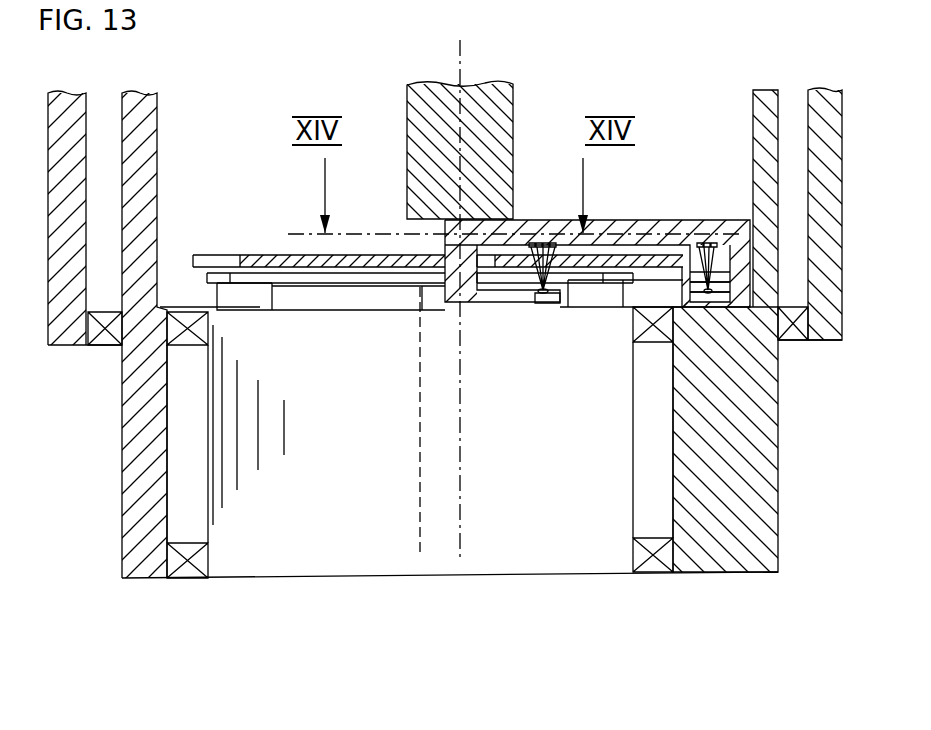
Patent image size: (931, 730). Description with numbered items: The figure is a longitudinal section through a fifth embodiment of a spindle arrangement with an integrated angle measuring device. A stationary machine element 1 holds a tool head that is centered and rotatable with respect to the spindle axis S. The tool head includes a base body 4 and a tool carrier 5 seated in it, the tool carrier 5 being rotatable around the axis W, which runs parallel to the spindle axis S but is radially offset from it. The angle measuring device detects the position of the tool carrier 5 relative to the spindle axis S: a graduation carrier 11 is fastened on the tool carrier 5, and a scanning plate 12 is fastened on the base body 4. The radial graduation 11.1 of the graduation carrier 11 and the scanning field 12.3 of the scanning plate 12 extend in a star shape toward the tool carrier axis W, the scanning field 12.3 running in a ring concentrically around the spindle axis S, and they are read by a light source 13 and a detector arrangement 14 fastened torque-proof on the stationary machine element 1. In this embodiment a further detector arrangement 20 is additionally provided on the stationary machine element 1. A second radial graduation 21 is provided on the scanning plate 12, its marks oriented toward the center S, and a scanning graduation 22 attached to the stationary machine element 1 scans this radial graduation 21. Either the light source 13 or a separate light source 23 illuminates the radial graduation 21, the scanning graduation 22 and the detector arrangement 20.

The stationary machine element 1 is at (497, 127).
The base body 4 is at (717, 533).
The tool carrier 5 is at (570, 523).
The graduation carrier 11 is at (222, 278).
The radial graduation 11.1 is at (262, 283).
The scanning plate 12 is at (320, 262).
The scanning field 12.3 is at (512, 260).
The light source 13 is at (540, 300).
The detector arrangement 14 is at (543, 243).
The further detector arrangement 20 is at (707, 243).
The second radial graduation 21 is at (690, 257).
The scanning graduation 22 is at (700, 283).
The separate light source 23 is at (700, 297).
The axis of rotation of the tool carrier W is at (420, 523).
The spindle axis S is at (462, 528).